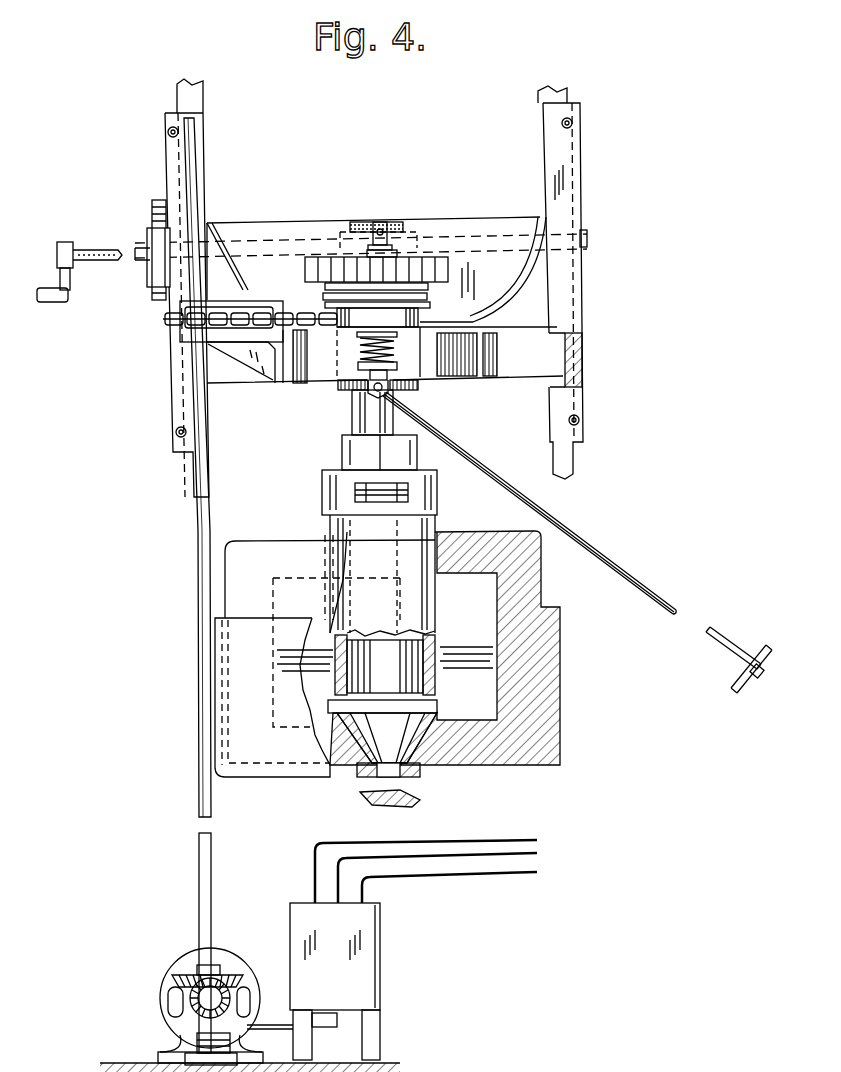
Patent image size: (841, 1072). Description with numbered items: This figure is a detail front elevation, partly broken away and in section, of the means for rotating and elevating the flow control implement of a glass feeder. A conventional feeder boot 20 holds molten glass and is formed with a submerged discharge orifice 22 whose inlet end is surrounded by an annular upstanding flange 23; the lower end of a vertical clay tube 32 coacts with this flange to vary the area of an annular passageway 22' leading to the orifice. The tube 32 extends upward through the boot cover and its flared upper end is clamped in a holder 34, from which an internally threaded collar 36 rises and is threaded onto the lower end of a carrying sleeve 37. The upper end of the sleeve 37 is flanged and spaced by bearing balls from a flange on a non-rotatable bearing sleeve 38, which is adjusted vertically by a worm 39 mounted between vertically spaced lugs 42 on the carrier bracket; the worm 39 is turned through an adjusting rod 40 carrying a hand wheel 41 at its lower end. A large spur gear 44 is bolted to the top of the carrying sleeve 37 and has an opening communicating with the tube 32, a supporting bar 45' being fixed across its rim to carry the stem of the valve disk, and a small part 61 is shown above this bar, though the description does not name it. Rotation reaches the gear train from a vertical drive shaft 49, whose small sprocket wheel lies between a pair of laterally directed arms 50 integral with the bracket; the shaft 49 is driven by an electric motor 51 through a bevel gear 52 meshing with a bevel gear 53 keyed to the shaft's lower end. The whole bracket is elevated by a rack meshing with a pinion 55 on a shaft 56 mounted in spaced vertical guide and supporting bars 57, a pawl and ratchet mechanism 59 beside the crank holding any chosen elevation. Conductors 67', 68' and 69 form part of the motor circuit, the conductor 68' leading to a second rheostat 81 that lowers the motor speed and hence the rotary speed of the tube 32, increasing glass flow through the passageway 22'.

The feeder boot 20 is at (541, 587).
The discharge orifice 22 is at (387, 760).
The annular passageway 22' is at (410, 671).
The annular upstanding flange 23 is at (447, 713).
The tube 32 is at (435, 602).
The holder 34 is at (322, 482).
The internally threaded collar 36 is at (342, 450).
The carrying sleeve 37 is at (353, 409).
The bearing sleeve 38 is at (418, 318).
The worm 39 is at (394, 350).
The adjusting rod 40 is at (560, 521).
The hand wheel 41 is at (767, 647).
The lugs 42 is at (360, 365).
The spur gear 44 is at (434, 257).
The supporting bar 45' is at (343, 239).
The vertical drive shaft 49 is at (197, 515).
The laterally directed arms 50 is at (180, 334).
The electric motor 51 is at (168, 1012).
The bevel gear 52 is at (263, 1008).
The bevel gear 53 is at (225, 972).
The pinion 55 is at (362, 217).
The shaft 56 is at (87, 252).
The vertical guide and supporting bars 57 is at (575, 147).
The pawl and ratchet mechanism 59 is at (152, 207).
The pin 61 is at (390, 223).
The conductor 67' is at (426, 858).
The conductor 68' is at (447, 858).
The conductor 69 is at (497, 873).
The second rheostat 81 is at (370, 975).